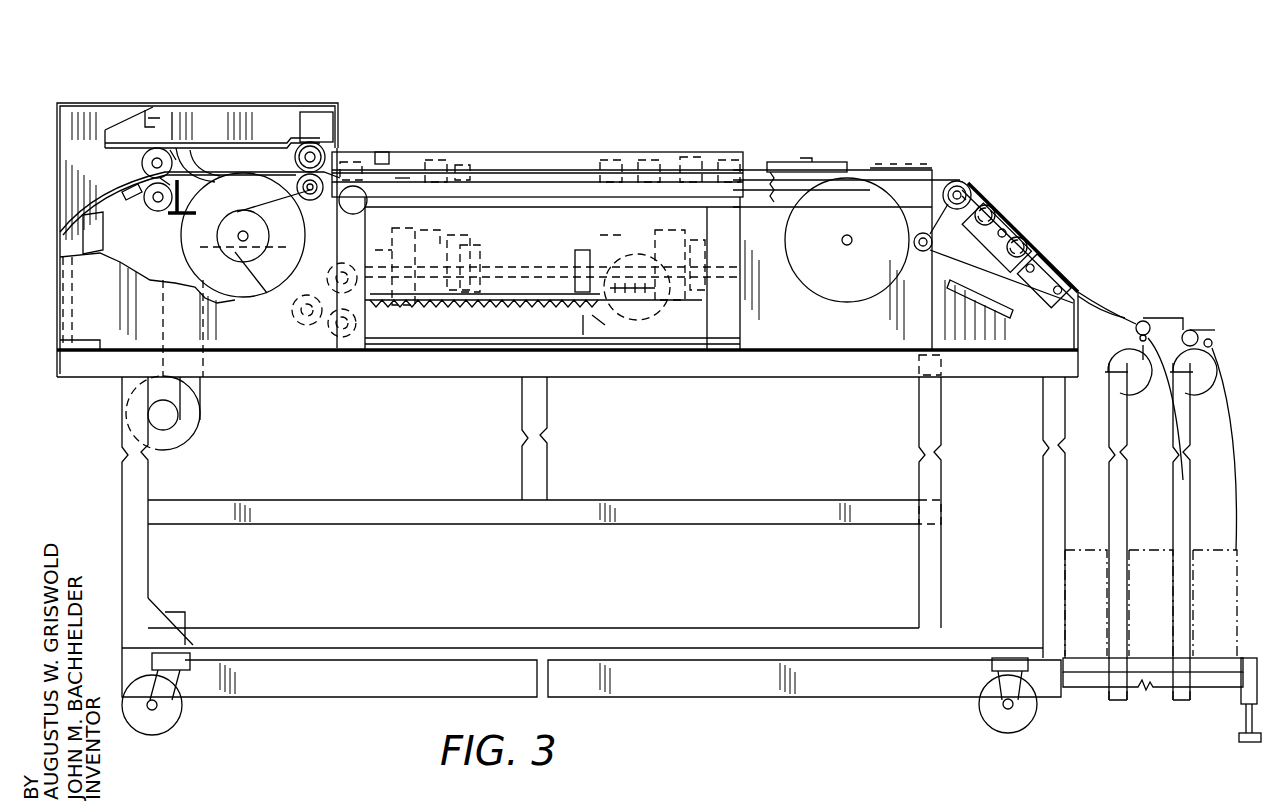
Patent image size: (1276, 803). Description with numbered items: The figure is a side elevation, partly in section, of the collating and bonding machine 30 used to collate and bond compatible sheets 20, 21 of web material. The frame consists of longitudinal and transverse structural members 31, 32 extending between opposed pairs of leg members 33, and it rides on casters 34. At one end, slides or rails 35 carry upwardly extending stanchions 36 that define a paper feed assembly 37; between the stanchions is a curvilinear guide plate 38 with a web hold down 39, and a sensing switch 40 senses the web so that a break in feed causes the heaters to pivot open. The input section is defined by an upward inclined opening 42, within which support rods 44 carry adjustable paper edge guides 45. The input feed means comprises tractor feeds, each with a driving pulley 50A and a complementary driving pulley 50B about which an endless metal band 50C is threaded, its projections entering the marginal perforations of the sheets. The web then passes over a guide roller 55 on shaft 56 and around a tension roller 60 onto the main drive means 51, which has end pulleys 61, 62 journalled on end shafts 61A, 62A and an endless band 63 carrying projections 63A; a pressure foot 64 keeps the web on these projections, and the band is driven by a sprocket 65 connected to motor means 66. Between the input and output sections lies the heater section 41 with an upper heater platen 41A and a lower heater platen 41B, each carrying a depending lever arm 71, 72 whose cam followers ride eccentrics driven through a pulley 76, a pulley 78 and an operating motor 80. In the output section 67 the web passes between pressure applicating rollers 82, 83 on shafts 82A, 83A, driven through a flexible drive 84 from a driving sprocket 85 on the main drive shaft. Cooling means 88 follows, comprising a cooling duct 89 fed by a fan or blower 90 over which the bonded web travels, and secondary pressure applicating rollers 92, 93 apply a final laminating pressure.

The compatible sheet 20 is at (1127, 310).
The compatible sheet 21 is at (1118, 315).
The collating and bonding machine 30 is at (983, 135).
The longitudinal structural member 31 is at (366, 360).
The transverse structural member 32 is at (942, 370).
The leg member 33 is at (135, 588).
The caster 34 is at (990, 715).
The slide or rail 35 is at (1080, 680).
The stanchion 36 is at (1197, 335).
The paper feed assembly / input section 37 is at (1064, 190).
The curvilinear guide plate 38 is at (1113, 356).
The web hold down 39 is at (1143, 321).
The sensing switch 40 is at (1143, 345).
The heater section 41 is at (642, 143).
The upper heater platen 41A is at (545, 155).
The lower heater platen 41B is at (490, 175).
The upward inclined opening 42 is at (1100, 295).
The support rod 44 is at (1040, 290).
The paper edge guide 45 is at (1045, 275).
The driving pulley 50A is at (990, 212).
The complementary driving pulley 50B is at (1021, 244).
The metal band 50C is at (1005, 230).
The main drive means 51 is at (760, 300).
The guide roller 55 is at (975, 185).
The shaft 56 is at (957, 181).
The tension roller 60 is at (925, 249).
The end pulley 61 is at (858, 285).
The end shaft 61A is at (842, 241).
The end pulley 62 is at (227, 187).
The drive shaft 62A is at (238, 237).
The endless band 63 is at (485, 314).
The projection 63A is at (410, 178).
The pressure foot 64 is at (830, 165).
The sprocket 65 is at (235, 252).
The motor means 66 is at (328, 332).
The output section 67 is at (272, 72).
The lever arm 71 is at (450, 228).
The lever arm 72 is at (382, 150).
The sprocket or pulley 76 is at (575, 250).
The pulley 78 is at (580, 333).
The operating motor 80 is at (595, 333).
The pressure applicating roller 82 is at (310, 142).
The shaft 82A is at (313, 150).
The pressure applicating roller 83 is at (313, 182).
The shaft 83A is at (330, 177).
The flexible drive 84 is at (237, 212).
The driving sprocket 85 is at (235, 213).
The cooling means 88 is at (175, 160).
The cooling duct 89 is at (170, 270).
The fan or blower 90 is at (195, 425).
The secondary pressure applicating roller 92 is at (147, 165).
The secondary pressure applicating roller 93 is at (150, 203).